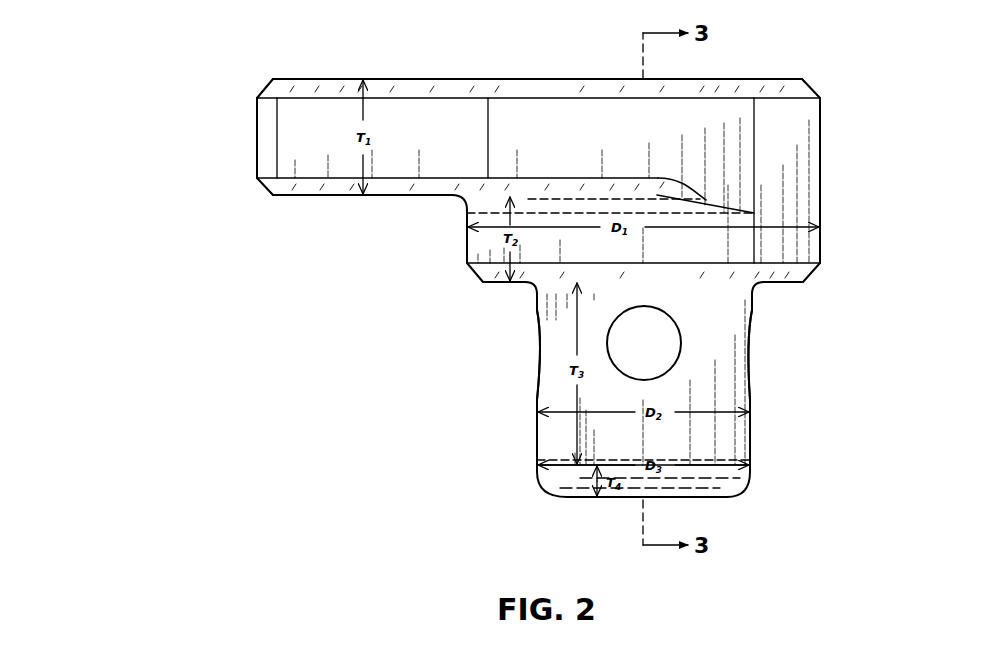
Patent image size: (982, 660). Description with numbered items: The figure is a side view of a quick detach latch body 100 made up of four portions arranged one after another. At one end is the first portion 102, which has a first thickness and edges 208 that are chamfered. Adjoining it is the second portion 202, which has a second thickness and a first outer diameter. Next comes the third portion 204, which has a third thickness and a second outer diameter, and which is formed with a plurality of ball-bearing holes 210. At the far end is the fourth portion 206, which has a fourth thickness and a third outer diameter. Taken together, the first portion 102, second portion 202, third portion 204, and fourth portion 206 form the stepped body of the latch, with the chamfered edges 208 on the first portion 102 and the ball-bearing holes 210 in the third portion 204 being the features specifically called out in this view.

The latch body 100 is at (118, 93).
The first portion 102 is at (241, 148).
The second portion 202 is at (457, 239).
The third portion 204 is at (510, 387).
The fourth portion 206 is at (531, 482).
The edges 208 is at (552, 90).
The ball-bearing holes 210 is at (605, 344).